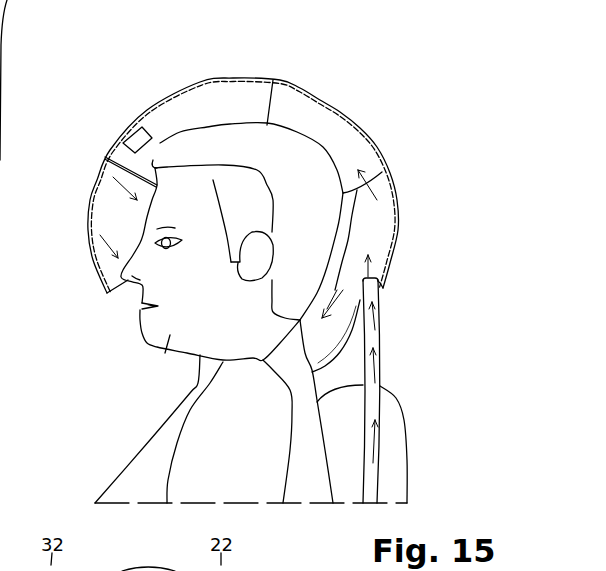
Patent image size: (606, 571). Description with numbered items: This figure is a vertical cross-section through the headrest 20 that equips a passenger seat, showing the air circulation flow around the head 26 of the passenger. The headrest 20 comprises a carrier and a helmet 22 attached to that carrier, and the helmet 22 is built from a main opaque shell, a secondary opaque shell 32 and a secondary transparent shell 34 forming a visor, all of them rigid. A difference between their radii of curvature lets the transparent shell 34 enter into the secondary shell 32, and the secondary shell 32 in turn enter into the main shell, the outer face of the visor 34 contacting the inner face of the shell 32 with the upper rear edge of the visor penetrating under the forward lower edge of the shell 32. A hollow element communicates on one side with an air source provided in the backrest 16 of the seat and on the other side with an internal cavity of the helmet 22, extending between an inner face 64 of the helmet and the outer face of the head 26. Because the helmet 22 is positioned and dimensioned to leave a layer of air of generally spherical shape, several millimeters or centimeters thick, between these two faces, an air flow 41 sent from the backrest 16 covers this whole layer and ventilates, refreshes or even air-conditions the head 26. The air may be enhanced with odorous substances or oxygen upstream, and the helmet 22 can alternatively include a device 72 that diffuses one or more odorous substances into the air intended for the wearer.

The backrest 16 is at (2, 67).
The headrest 20 is at (228, 187).
The helmet 22 is at (249, 148).
The head 26 is at (153, 355).
The secondary opaque shell 32 is at (209, 80).
The secondary transparent shell 34 is at (88, 257).
The air flow 41 is at (386, 172).
The inner face of the helmet 64 is at (340, 122).
The device for diffusing odorous substances 72 is at (142, 136).